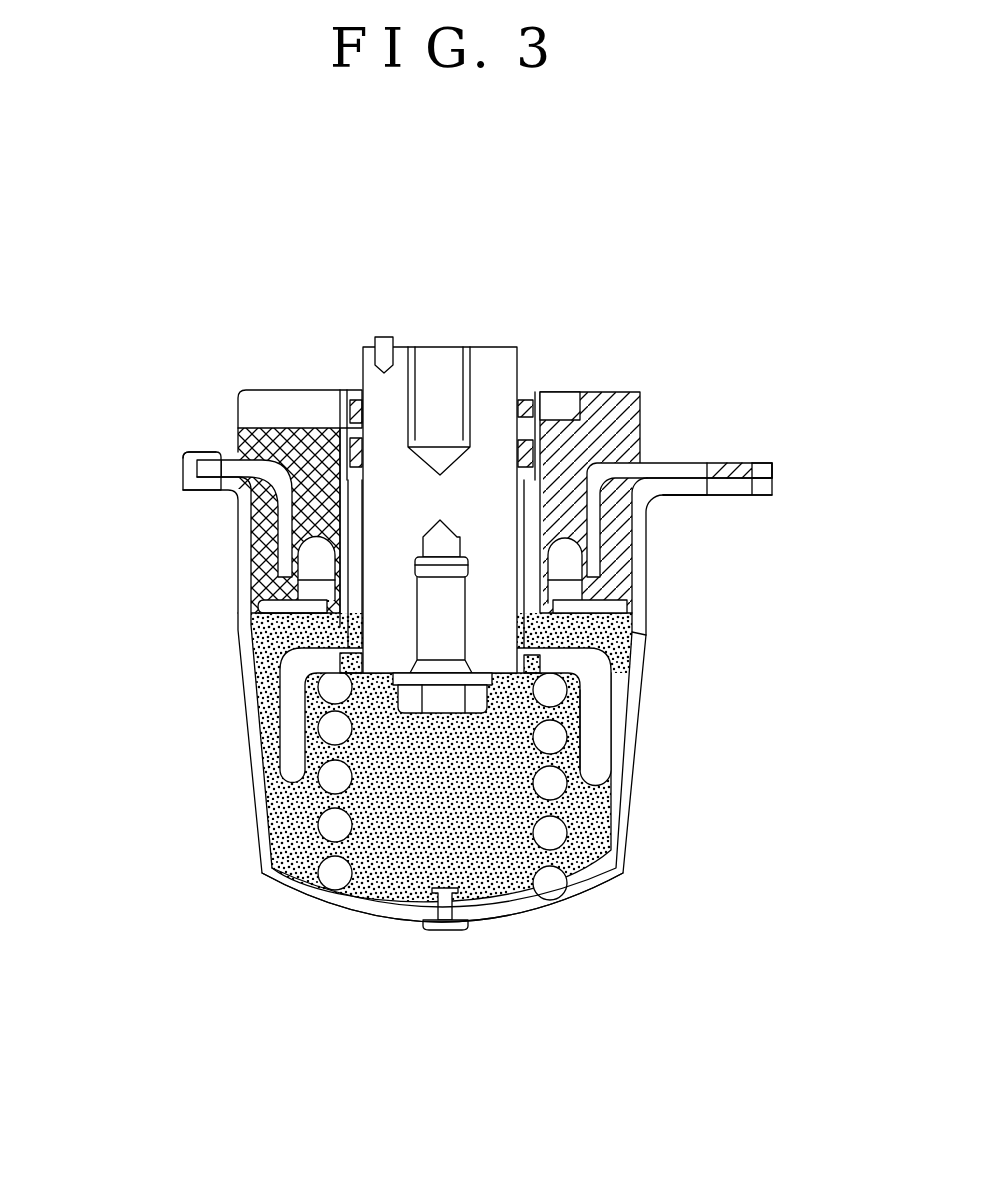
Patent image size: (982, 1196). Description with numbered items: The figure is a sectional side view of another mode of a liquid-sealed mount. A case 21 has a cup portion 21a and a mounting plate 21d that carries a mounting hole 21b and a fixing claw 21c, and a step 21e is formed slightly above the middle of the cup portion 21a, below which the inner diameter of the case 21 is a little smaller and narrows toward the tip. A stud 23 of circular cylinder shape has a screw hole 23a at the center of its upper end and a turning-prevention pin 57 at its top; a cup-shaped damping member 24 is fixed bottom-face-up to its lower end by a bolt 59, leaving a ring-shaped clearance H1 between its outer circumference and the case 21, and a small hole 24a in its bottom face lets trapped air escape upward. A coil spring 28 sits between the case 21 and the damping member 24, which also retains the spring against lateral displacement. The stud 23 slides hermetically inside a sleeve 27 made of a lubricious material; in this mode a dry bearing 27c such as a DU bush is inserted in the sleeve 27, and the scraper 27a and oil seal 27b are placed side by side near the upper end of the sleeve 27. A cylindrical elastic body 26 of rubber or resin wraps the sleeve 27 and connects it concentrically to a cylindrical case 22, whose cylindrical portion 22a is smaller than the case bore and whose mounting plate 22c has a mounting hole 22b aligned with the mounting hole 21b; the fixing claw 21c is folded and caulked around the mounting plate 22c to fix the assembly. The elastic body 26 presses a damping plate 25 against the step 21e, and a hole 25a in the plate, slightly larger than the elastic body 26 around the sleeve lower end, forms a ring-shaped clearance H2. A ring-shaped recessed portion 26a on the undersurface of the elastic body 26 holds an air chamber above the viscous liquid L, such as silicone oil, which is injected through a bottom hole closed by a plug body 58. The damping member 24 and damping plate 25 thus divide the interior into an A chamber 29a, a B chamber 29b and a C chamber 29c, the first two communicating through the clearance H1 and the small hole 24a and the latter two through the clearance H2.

The case 21 is at (597, 893).
The cup portion 21a is at (620, 847).
The mounting hole 21b is at (740, 497).
The fixing claw 21c is at (183, 460).
The mounting plate 21d is at (688, 497).
The step 21e is at (642, 623).
The cylindrical case 22 is at (610, 392).
The cylindrical portion 22a is at (600, 535).
The mounting hole 22b is at (727, 463).
The mounting plate 22c is at (700, 463).
The stud 23 is at (497, 357).
The screw hole 23a is at (467, 385).
The damping member 24 is at (593, 745).
The small hole 24a is at (523, 750).
The damping plate 25 is at (262, 606).
The hole 25a is at (262, 634).
The cylindrical elastic body 26 is at (633, 437).
The recessed portion 26a is at (355, 542).
The sleeve 27 is at (237, 428).
The scraper 27a is at (358, 392).
The oil seal 27b is at (303, 487).
The dry bearing 27c is at (213, 452).
The coil spring 28 is at (552, 800).
The A chamber 29a is at (317, 800).
The B chamber 29b is at (327, 640).
The C chamber 29c is at (300, 590).
The pin 57 is at (384, 335).
The plug body 58 is at (445, 932).
The bolt 59 is at (398, 697).
The viscous liquid L is at (427, 892).
The ring-shaped clearance H1 is at (617, 715).
The ring-shaped clearance H2 is at (620, 650).